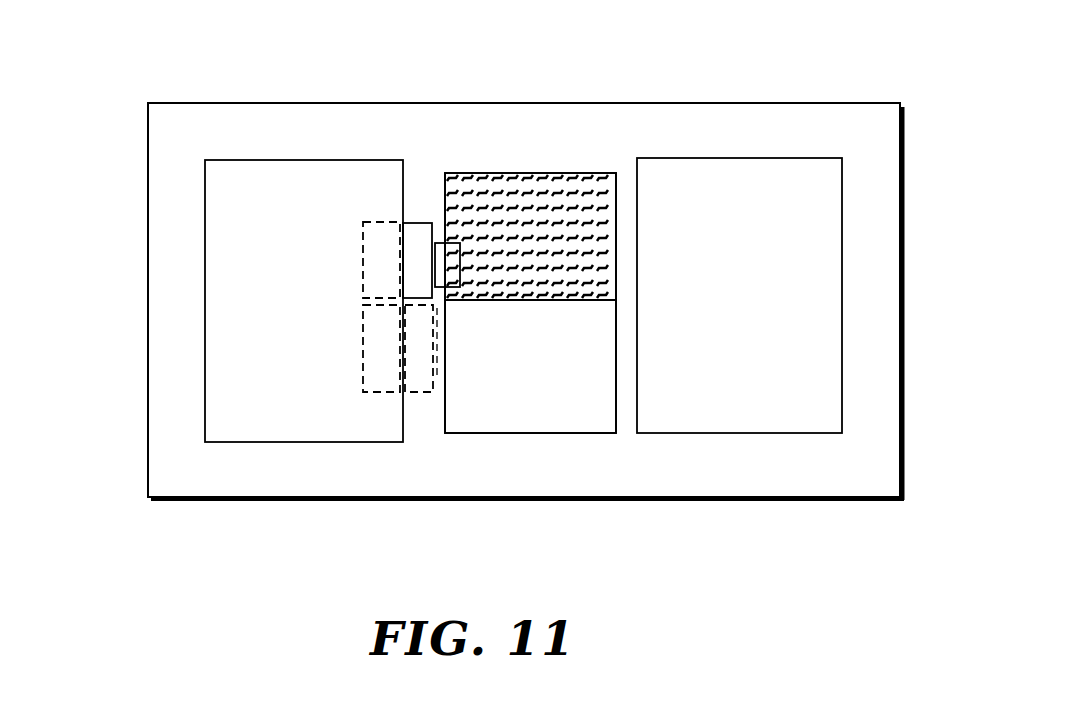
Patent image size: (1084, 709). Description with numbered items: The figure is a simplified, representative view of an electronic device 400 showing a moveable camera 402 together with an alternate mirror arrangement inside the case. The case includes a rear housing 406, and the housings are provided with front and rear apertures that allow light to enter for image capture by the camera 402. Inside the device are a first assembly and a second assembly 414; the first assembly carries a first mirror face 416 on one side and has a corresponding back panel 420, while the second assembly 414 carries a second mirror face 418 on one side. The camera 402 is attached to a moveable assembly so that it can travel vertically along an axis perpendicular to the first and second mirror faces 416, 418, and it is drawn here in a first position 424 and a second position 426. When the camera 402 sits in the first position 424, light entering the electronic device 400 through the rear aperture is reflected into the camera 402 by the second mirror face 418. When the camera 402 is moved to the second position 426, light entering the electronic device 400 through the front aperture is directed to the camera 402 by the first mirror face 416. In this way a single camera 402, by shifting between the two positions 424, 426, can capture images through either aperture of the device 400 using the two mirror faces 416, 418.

The electronic device 400 is at (175, 94).
The camera 402 is at (362, 323).
The rear housing 406 is at (738, 417).
The second assembly 414 is at (542, 172).
The first mirror face 416 is at (478, 437).
The second mirror face 418 is at (483, 187).
The back panel 420 is at (535, 415).
The first position 424 is at (385, 242).
The second position 426 is at (383, 378).